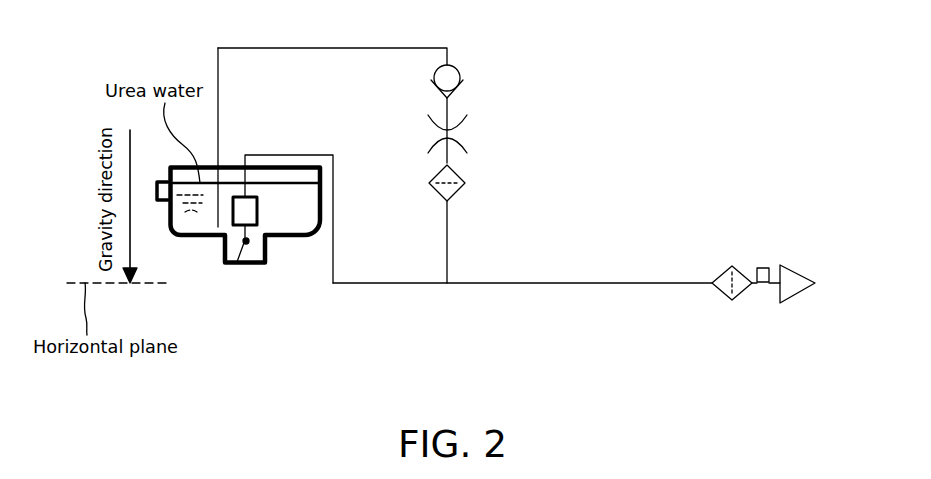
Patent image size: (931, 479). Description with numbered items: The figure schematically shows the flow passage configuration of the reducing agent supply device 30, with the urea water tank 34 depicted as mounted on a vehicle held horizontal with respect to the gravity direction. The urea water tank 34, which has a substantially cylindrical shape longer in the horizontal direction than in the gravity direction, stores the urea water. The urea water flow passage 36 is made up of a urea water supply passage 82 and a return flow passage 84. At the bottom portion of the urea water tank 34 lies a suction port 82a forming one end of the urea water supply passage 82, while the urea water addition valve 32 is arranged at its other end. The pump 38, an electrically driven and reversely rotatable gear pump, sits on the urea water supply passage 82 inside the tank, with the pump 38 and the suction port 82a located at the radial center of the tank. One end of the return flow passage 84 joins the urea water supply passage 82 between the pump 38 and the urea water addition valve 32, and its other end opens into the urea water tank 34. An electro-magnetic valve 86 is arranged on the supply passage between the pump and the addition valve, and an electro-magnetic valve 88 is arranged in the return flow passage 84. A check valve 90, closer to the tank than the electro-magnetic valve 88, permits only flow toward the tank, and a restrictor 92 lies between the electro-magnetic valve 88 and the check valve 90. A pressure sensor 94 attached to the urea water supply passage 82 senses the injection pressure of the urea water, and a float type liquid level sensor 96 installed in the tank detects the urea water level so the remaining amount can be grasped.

The reducing agent supply device 30 is at (655, 58).
The urea water addition valve 32 is at (797, 297).
The urea water tank 34 is at (200, 237).
The urea water flow passage 36 is at (484, 305).
The pump 38 is at (233, 264).
The urea water supply passage 82 is at (373, 283).
The suction port 82a is at (248, 243).
The return flow passage 84 is at (448, 235).
The electro-magnetic valve 86 is at (723, 293).
The electro-magnetic valve 88 is at (458, 198).
The check valve 90 is at (460, 70).
The restrictor 92 is at (455, 145).
The pressure sensor 94 is at (760, 267).
The liquid level sensor 96 is at (163, 203).